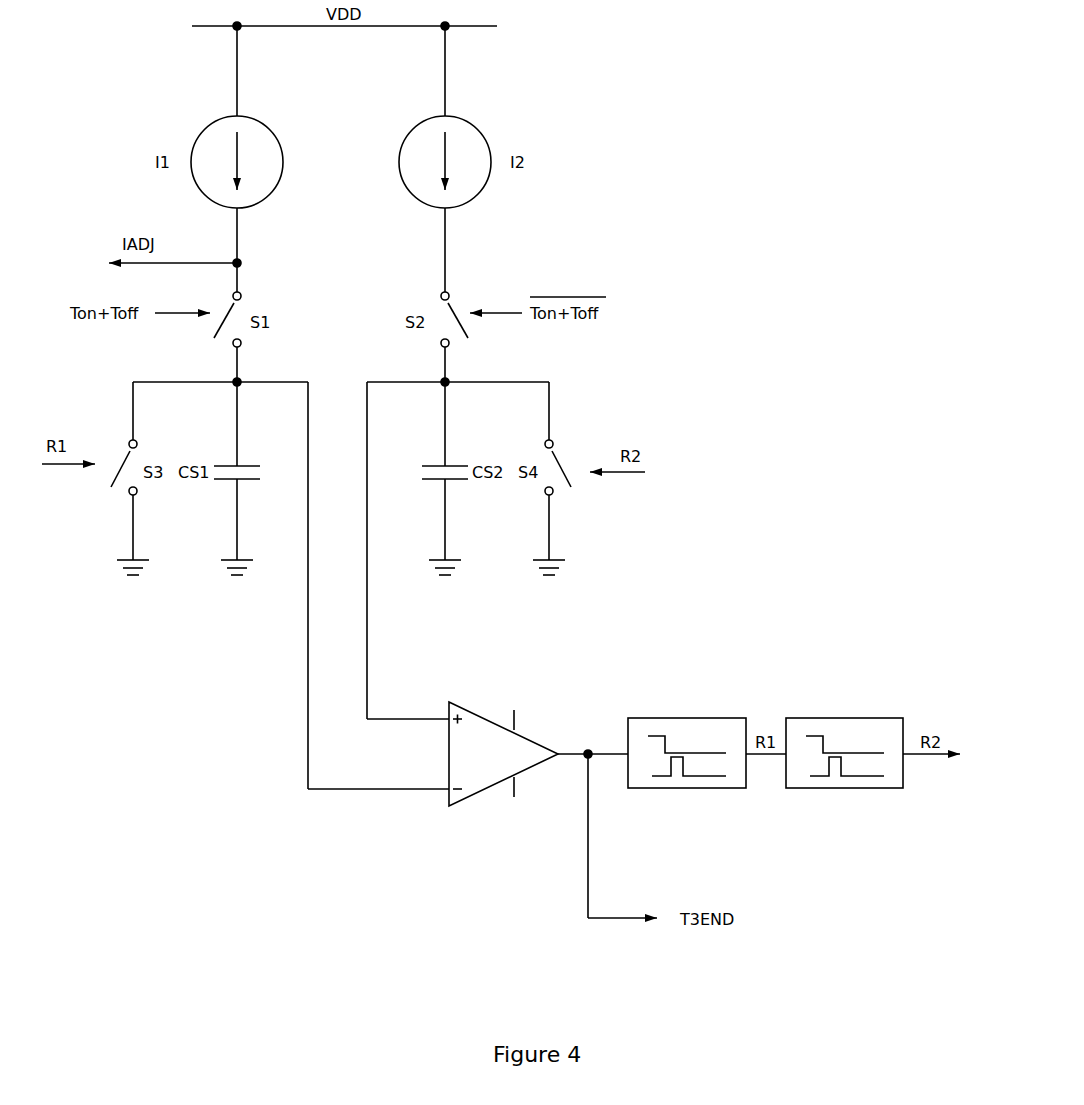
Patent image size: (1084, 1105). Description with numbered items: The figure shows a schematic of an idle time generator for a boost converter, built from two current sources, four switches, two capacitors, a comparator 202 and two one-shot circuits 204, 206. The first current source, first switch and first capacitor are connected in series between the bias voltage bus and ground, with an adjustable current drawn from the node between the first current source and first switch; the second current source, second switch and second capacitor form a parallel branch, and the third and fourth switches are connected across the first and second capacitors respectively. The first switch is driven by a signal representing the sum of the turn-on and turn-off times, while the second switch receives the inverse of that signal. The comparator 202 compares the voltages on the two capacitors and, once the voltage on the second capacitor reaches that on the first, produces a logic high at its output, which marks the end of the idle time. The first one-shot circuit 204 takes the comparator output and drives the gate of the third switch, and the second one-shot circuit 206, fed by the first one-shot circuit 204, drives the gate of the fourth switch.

The comparator 202 is at (433, 754).
The first one-shot circuit 204 is at (688, 718).
The second one-shot circuit 206 is at (848, 718).